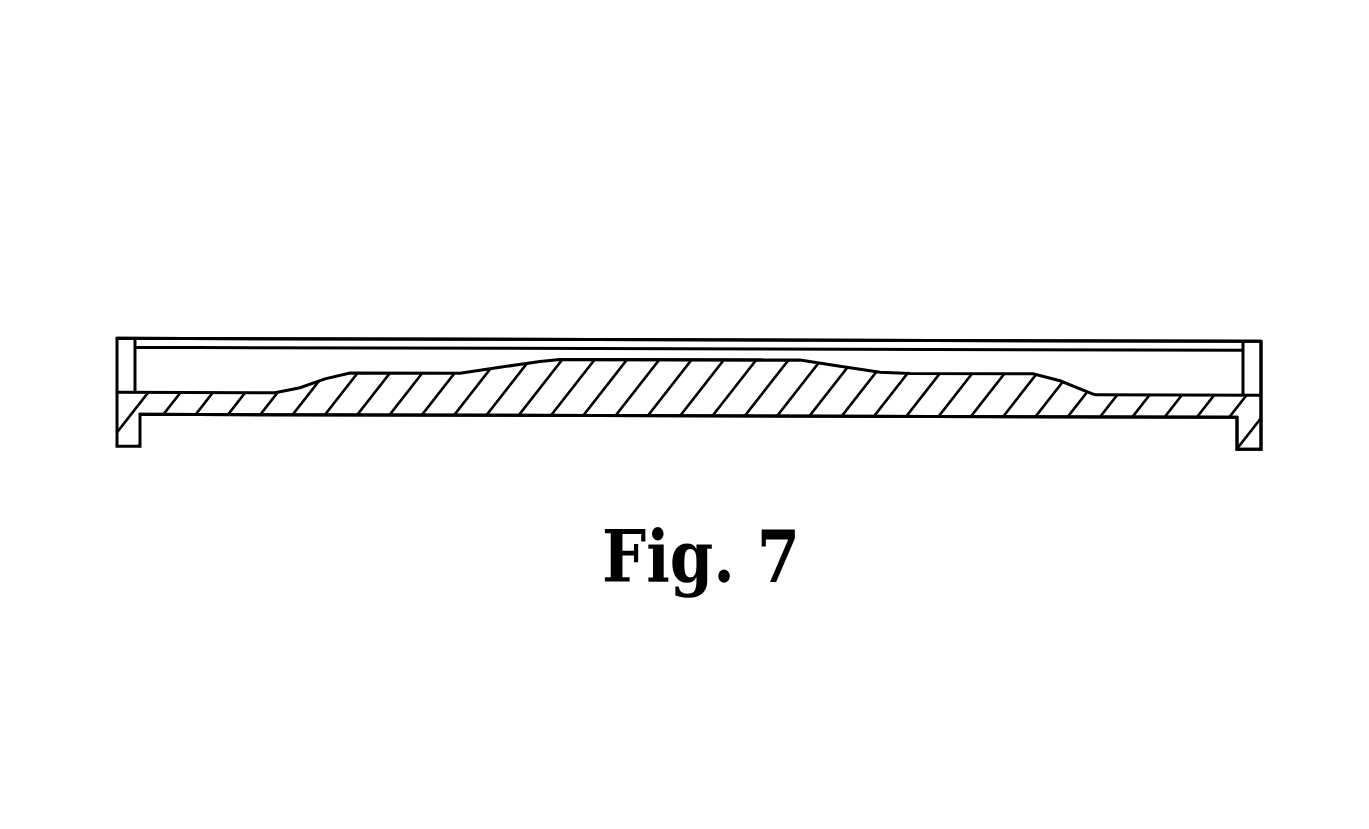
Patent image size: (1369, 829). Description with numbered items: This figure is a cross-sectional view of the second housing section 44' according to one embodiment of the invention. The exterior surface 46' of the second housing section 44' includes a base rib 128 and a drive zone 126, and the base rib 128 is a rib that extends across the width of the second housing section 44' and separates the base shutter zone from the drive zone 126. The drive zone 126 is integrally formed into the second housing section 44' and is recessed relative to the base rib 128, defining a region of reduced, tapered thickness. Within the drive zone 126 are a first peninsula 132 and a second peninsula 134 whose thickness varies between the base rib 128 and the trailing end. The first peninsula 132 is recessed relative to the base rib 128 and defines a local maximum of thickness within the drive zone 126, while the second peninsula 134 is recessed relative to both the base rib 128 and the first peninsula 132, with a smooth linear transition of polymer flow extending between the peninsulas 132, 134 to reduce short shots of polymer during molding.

The second housing section 44' is at (651, 244).
The exterior surface 46' is at (1302, 354).
The drive zone 126 is at (1117, 365).
The base rib 128 is at (325, 338).
The first peninsula 132 is at (715, 358).
The second peninsula 134 is at (406, 372).